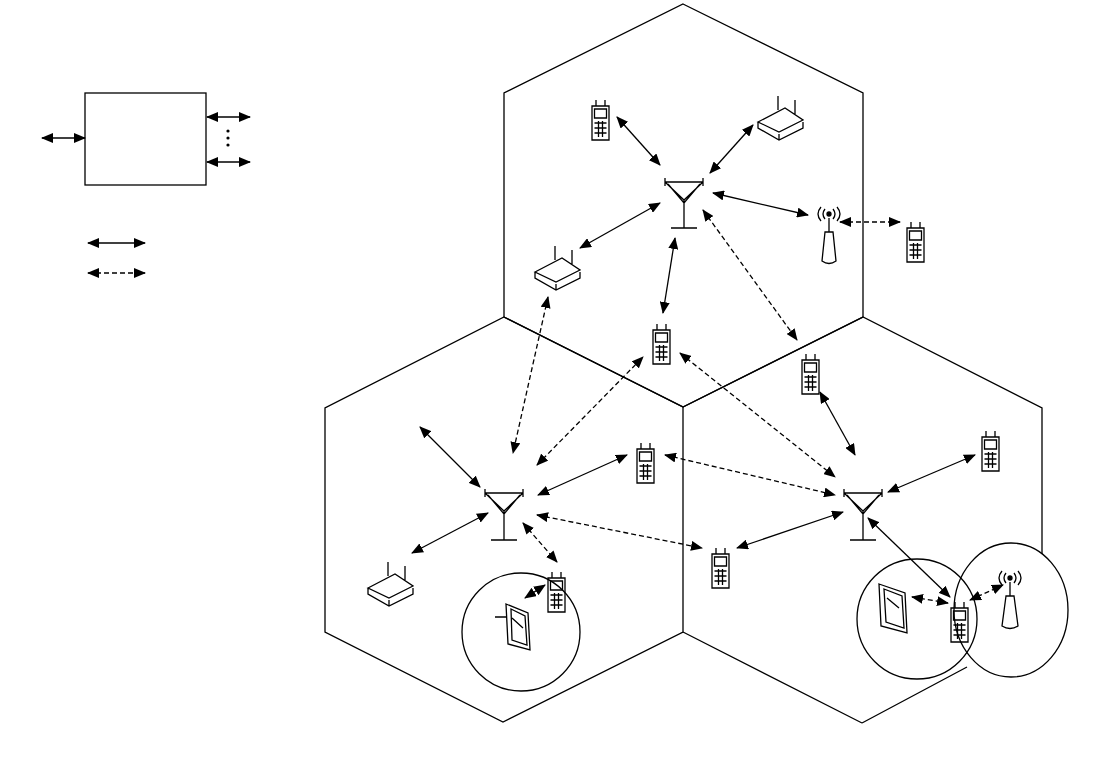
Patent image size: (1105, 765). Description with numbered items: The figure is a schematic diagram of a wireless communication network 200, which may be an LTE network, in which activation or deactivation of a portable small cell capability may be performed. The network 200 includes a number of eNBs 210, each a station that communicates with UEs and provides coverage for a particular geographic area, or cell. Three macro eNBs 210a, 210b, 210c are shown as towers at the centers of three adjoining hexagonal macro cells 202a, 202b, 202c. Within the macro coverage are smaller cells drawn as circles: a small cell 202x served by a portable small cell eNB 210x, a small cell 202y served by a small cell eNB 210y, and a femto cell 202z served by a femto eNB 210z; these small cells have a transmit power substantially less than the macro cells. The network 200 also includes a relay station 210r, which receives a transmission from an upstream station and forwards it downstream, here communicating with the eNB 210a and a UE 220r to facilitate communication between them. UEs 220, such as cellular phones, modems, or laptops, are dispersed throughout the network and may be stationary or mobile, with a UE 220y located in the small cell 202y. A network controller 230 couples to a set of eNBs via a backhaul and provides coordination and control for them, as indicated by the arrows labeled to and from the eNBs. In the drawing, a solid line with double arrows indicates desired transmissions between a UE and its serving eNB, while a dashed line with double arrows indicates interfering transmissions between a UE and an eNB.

The wireless communication network 200 is at (985, 62).
The macro cell 202a is at (783, 40).
The macro cell 202b is at (402, 368).
The macro cell 202c is at (952, 362).
The small cell 202x is at (476, 590).
The small cell 202y is at (868, 584).
The femto cell 202z is at (1001, 545).
The eNB 210 is at (820, 376).
The macro eNB 210a is at (689, 170).
The macro eNB 210b is at (511, 485).
The macro eNB 210c is at (871, 485).
The relay station 210r is at (822, 252).
The portable small cell eNB 210x is at (528, 655).
The small cell eNB 210y is at (907, 638).
The femto eNB 210z is at (1019, 621).
The UE 220 is at (591, 118).
The UE 220r is at (923, 255).
The UE 220y is at (952, 638).
The network controller 230 is at (148, 93).